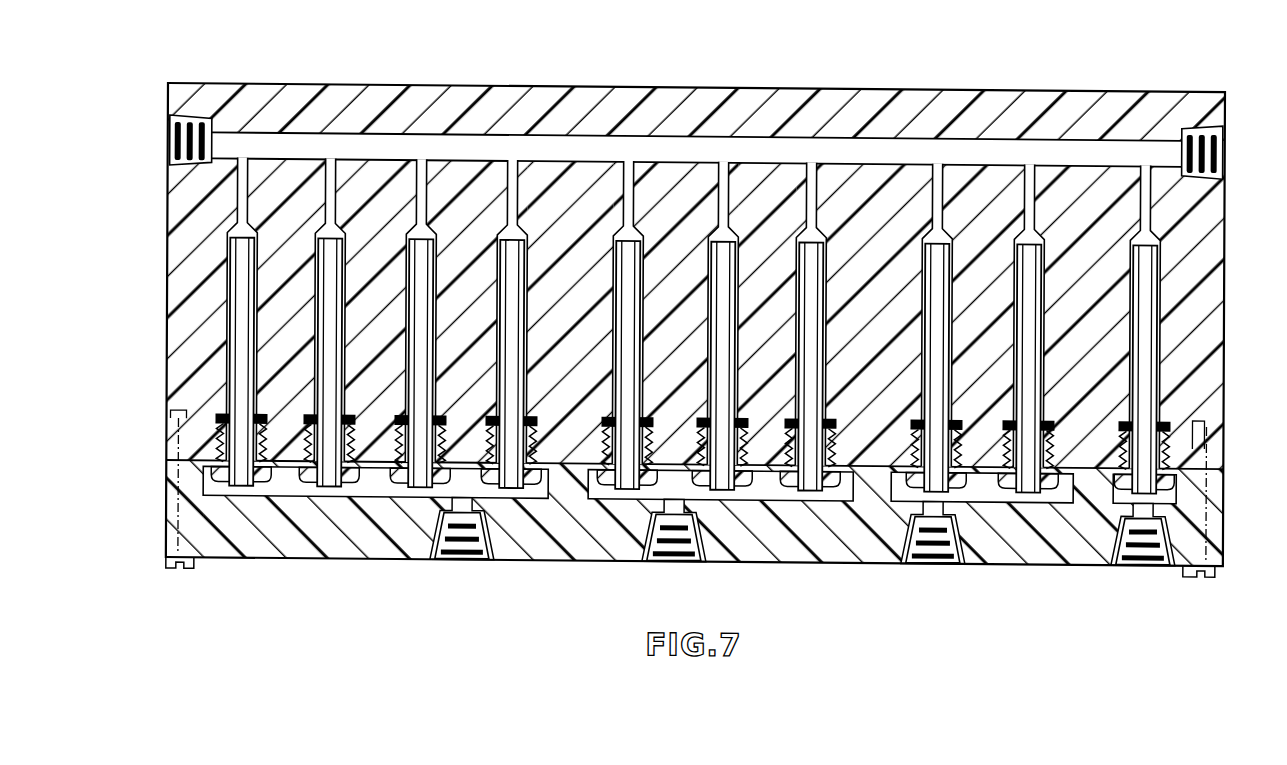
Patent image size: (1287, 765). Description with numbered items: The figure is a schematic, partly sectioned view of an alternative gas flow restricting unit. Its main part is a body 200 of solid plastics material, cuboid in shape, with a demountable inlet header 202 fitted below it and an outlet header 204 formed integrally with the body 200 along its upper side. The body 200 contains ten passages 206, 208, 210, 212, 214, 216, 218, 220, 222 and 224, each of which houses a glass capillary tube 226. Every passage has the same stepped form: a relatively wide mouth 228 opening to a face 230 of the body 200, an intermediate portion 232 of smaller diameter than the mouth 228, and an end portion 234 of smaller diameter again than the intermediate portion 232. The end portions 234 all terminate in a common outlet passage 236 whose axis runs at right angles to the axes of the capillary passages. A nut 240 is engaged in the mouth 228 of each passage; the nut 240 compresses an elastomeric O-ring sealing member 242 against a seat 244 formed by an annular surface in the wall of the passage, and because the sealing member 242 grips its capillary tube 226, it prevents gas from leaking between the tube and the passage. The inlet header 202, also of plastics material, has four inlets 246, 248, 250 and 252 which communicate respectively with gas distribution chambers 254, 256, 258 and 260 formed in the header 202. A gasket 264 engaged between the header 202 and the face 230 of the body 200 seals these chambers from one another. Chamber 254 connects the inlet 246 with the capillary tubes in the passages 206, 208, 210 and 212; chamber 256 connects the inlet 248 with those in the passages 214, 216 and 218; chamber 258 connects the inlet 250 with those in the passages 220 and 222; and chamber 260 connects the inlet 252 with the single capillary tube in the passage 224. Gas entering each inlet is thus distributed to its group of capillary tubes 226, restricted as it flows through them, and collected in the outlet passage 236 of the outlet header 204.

The body 200 is at (1187, 313).
The inlet header 202 is at (1047, 538).
The outlet header 204 is at (725, 150).
The passage 206 is at (257, 261).
The passage 208 is at (347, 265).
The passage 210 is at (450, 240).
The passage 212 is at (553, 240).
The passage 214 is at (652, 258).
The passage 216 is at (745, 250).
The passage 218 is at (852, 256).
The passage 220 is at (955, 263).
The passage 222 is at (1047, 247).
The passage 224 is at (1163, 238).
The glass capillary tube 226 is at (236, 362).
The mouth 228 is at (218, 432).
The face 230 is at (288, 467).
The intermediate portion 232 is at (228, 235).
The end portion 234 is at (228, 196).
The outlet passage 236 is at (262, 139).
The nut 240 is at (350, 471).
The elastomeric O-ring sealing member 242 is at (556, 395).
The seat 244 is at (757, 393).
The inlet 246 is at (466, 558).
The inlet 248 is at (675, 558).
The inlet 250 is at (935, 553).
The inlet 252 is at (1147, 552).
The gas distribution chamber 254 is at (513, 494).
The gas distribution chamber 256 is at (723, 488).
The gas distribution chamber 258 is at (978, 488).
The gas distribution chamber 260 is at (1170, 486).
The gasket 264 is at (190, 470).